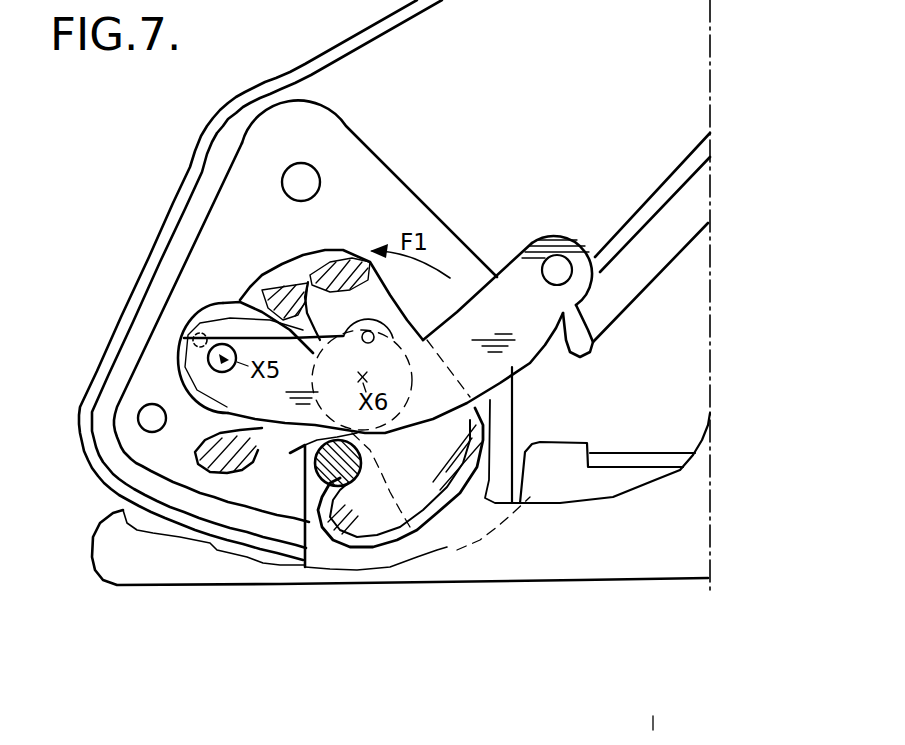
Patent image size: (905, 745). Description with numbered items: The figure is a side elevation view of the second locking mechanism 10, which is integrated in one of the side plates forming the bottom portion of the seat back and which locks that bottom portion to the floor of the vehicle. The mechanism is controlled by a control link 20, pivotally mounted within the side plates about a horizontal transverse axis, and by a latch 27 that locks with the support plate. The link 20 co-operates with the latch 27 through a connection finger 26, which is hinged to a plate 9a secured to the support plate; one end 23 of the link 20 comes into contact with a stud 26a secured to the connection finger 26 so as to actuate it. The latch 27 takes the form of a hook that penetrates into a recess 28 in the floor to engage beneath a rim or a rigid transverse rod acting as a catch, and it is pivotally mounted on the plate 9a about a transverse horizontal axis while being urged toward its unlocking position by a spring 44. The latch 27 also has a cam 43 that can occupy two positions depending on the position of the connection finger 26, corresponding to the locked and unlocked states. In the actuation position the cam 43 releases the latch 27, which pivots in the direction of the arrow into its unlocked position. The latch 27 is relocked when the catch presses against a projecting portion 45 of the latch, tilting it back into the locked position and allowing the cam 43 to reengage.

The plate 9a is at (290, 137).
The second locking mechanism 10 is at (207, 262).
The control link 20 is at (668, 182).
The end of the link 23 is at (578, 348).
The connection finger 26 is at (208, 358).
The stud 26a is at (558, 268).
The latch 27 is at (420, 497).
The recess 28 is at (330, 483).
The cam 43 is at (253, 300).
The spring 44 is at (192, 337).
The projecting portion 45 is at (207, 440).